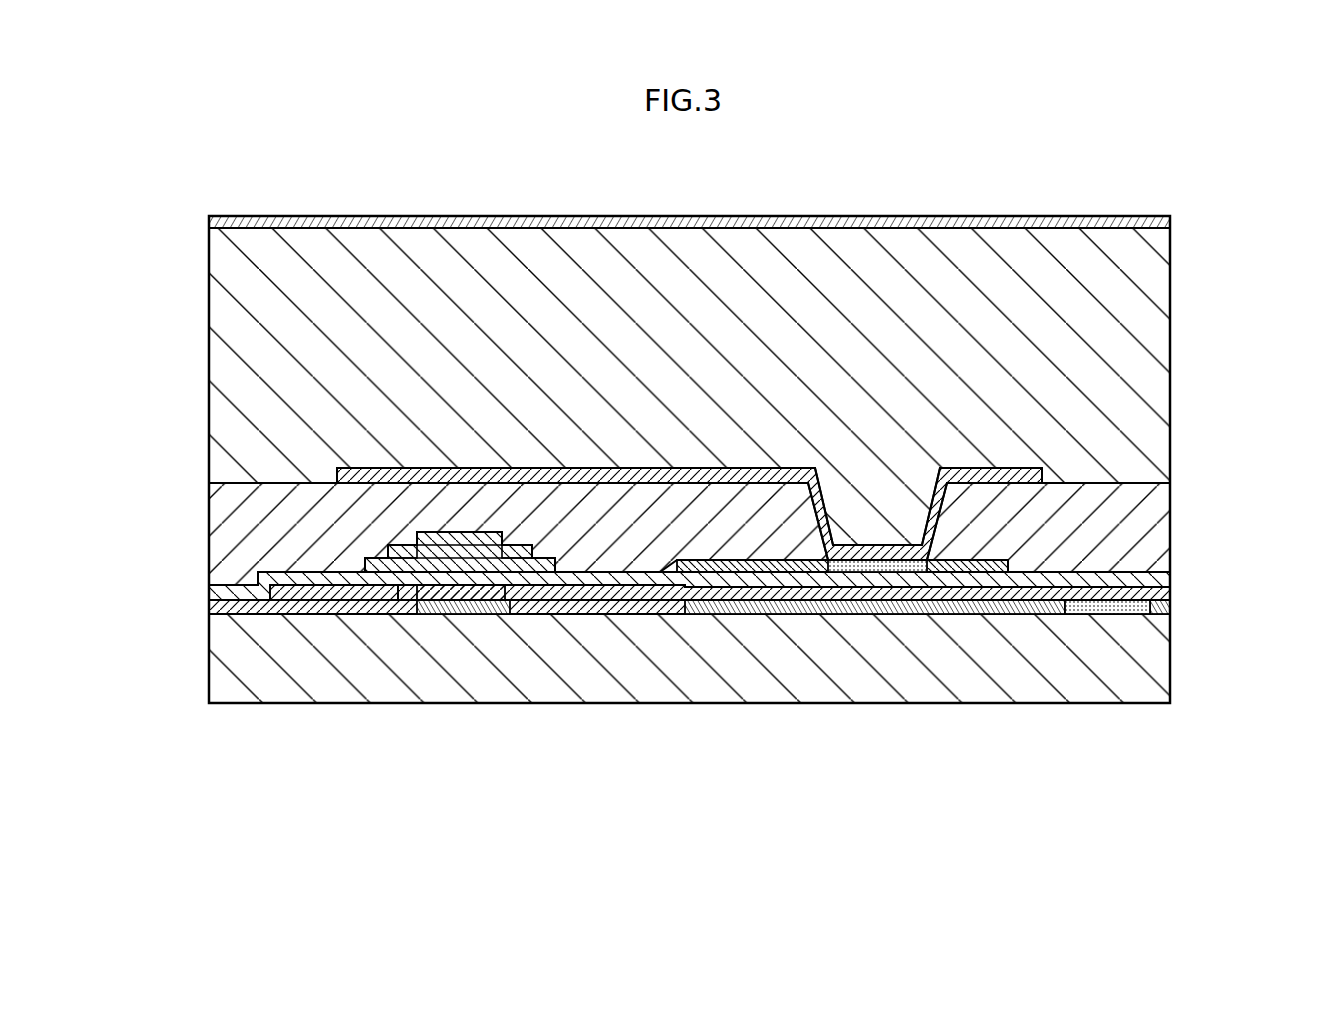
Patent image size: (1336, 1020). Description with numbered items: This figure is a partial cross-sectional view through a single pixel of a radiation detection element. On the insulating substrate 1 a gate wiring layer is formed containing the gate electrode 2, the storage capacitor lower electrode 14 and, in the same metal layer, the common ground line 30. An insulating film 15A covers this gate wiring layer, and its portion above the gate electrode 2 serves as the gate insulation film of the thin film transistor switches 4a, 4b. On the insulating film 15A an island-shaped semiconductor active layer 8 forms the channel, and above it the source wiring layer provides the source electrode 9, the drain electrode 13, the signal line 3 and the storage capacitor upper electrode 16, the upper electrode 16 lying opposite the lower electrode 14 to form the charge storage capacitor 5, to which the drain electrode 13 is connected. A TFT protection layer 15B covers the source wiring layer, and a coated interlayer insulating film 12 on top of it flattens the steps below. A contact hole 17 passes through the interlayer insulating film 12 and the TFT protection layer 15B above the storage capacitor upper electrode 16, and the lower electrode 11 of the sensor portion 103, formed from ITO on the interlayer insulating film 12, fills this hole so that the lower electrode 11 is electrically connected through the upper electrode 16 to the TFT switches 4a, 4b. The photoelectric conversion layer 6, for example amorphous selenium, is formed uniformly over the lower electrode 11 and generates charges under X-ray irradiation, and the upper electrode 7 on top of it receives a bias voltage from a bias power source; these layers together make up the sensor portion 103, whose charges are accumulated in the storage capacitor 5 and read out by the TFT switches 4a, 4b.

The insulating substrate 1 is at (1160, 678).
The gate electrode 2 is at (458, 606).
The signal line 3 is at (290, 592).
The thin film transistor 4a is at (481, 696).
The thin film transistor 4b is at (461, 592).
The charge storage capacitor 5 is at (927, 706).
The photoelectric conversion layer 6 is at (1150, 332).
The upper electrode 7 is at (1007, 216).
The semiconductor active layer 8 is at (492, 606).
The source electrode 9 is at (380, 592).
The lower electrode 11 is at (718, 466).
The interlayer insulating film 12 is at (1155, 522).
The drain electrode 13 is at (567, 600).
The storage capacitor lower electrode 14 is at (818, 606).
The insulating film 15A is at (1165, 596).
The TFT protection layer 15B is at (1163, 579).
The storage capacitor upper electrode 16 is at (738, 606).
The contact hole 17 is at (879, 477).
The common ground line 30 is at (1117, 617).
The sensor portion 103 is at (185, 217).